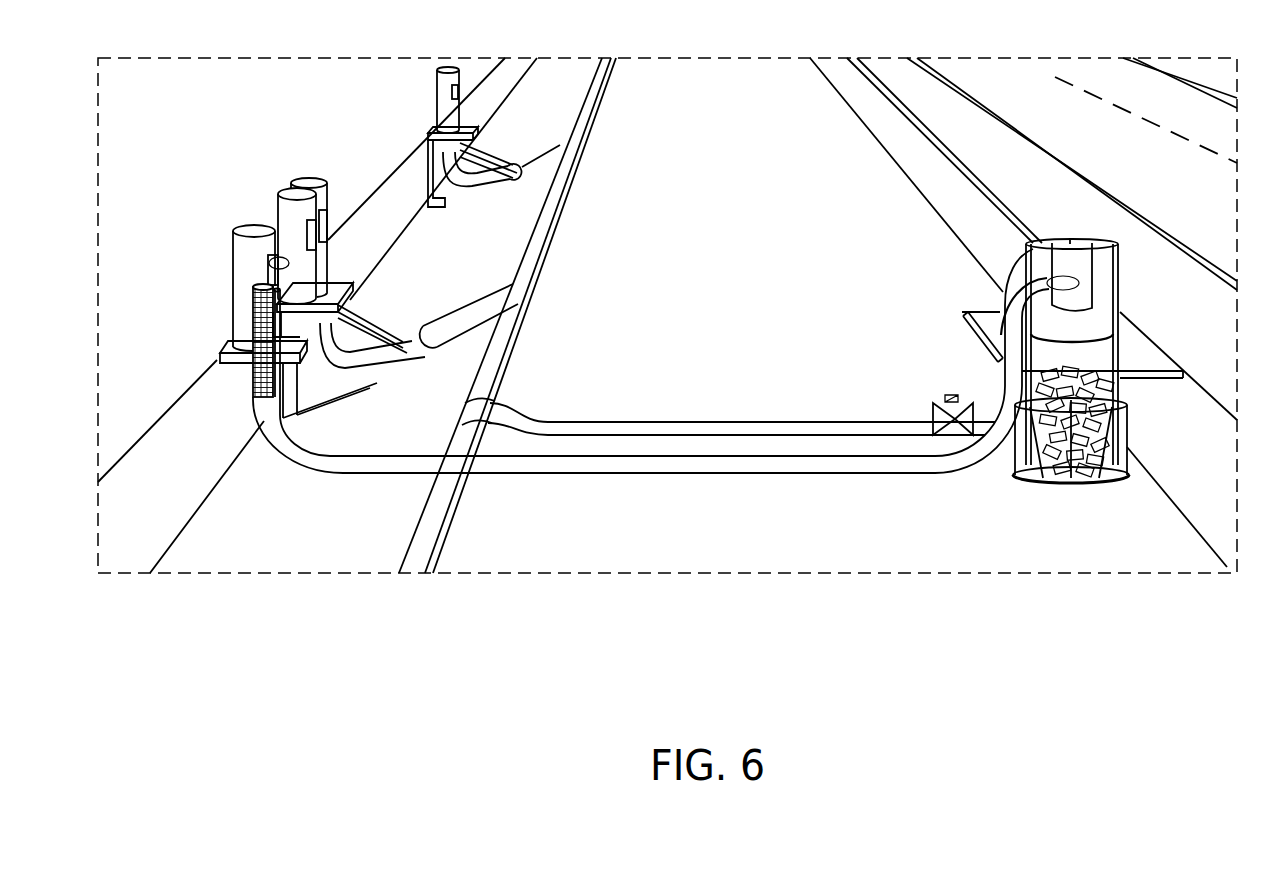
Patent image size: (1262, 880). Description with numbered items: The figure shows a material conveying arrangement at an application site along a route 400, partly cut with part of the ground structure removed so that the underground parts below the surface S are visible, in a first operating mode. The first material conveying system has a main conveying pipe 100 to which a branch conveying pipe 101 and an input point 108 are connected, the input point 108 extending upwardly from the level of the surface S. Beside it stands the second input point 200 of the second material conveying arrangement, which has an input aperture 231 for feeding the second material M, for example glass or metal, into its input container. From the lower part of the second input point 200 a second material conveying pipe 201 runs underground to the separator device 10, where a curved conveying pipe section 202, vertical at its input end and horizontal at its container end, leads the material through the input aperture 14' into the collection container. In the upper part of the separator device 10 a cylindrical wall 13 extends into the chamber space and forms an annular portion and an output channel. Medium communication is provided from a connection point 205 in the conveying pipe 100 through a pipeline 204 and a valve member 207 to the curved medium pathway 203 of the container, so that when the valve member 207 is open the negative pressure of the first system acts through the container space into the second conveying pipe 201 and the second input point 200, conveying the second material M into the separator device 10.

The route 400 is at (1038, 70).
The input point 108 is at (272, 180).
The second input point 200 is at (234, 234).
The input aperture 231 is at (282, 263).
The second material M is at (245, 330).
The surface S is at (182, 383).
The branch conveying pipe 101 is at (471, 318).
The connection point 205 is at (490, 406).
The pipeline 204 is at (740, 420).
The valve member 207 is at (938, 415).
The second material conveying pipe 201 is at (385, 470).
The conveying pipe section 202 is at (1007, 320).
The medium pathway 203 is at (1002, 290).
The input aperture 14' is at (1141, 246).
The separator device 10 is at (1108, 210).
The wall 13 is at (1068, 265).
The conveying pipe 100 is at (430, 540).